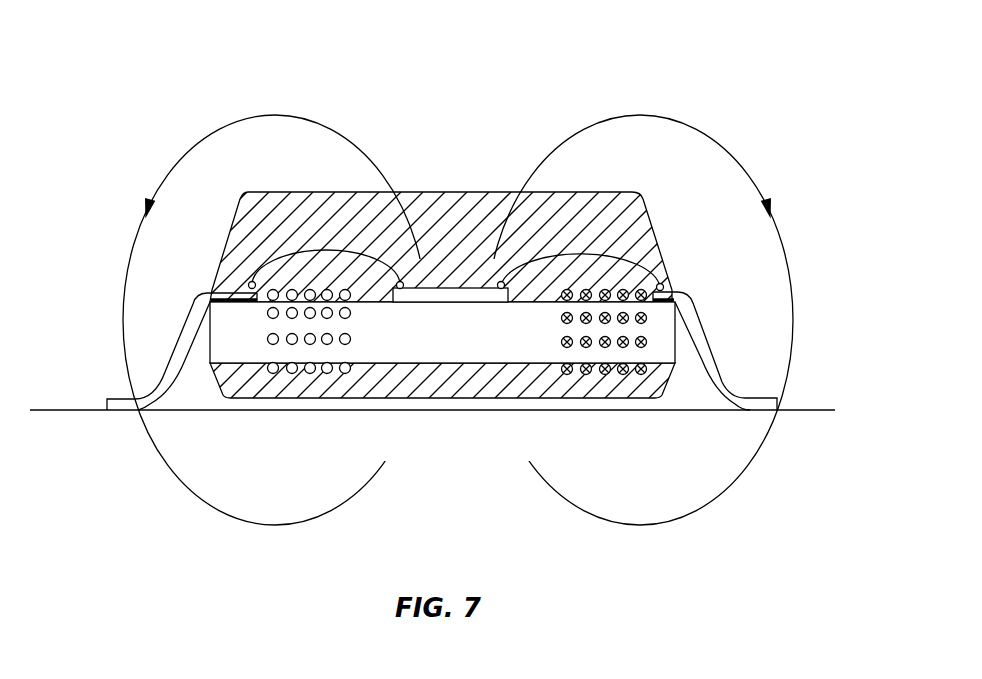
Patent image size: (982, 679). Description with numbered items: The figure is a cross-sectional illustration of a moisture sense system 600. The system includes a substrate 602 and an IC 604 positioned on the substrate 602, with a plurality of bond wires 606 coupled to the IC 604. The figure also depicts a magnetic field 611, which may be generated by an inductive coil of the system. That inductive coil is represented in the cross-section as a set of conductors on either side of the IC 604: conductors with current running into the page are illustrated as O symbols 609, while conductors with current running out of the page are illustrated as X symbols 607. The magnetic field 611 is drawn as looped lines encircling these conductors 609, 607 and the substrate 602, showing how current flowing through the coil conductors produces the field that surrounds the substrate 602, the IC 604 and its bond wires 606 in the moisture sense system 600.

The moisture sense system 600 is at (434, 283).
The substrate 602 is at (230, 315).
The IC 604 is at (450, 302).
The bond wires 606 is at (313, 250).
The conductors with current running out of the page 607 is at (650, 320).
The conductors with current running into the page 609 is at (263, 339).
The magnetic field 611 is at (200, 137).